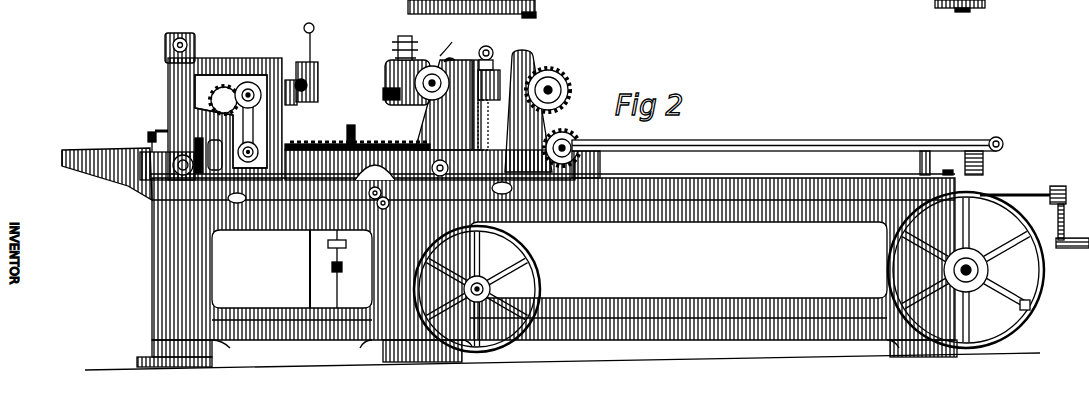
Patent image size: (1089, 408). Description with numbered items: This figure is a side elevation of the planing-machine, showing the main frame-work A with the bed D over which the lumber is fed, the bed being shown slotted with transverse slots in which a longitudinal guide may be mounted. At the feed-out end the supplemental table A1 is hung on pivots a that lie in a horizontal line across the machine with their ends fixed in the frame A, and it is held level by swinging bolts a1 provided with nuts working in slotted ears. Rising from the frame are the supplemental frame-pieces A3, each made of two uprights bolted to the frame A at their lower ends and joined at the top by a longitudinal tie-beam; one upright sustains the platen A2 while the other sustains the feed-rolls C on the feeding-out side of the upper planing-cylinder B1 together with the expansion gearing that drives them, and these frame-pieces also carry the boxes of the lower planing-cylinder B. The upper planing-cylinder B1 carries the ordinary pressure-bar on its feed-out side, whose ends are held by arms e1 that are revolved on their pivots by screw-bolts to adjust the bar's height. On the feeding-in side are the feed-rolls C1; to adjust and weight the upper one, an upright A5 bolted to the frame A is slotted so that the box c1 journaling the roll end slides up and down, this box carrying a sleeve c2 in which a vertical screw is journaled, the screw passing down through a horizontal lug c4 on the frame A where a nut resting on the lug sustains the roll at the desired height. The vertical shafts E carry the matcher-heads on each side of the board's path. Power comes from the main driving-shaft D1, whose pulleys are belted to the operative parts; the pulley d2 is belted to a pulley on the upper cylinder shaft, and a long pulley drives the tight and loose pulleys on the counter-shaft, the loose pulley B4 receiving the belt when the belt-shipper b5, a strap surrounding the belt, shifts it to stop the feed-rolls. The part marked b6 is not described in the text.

The main frame-work A is at (150, 275).
The supplemental table A1 is at (75, 148).
The platen A2 is at (168, 67).
The supplemental frame-pieces A3 is at (233, 57).
The upright A5 is at (533, 56).
The lower planing-cylinder B is at (150, 132).
The upper planing-cylinder B1 is at (416, 70).
The loose pulley B4 is at (487, 289).
The feed-rolls C is at (301, 64).
The feed-rolls C1 is at (500, 68).
The bed D is at (792, 140).
The main driving-shaft D1 is at (988, 268).
The vertical shafts E is at (351, 123).
The pivots a is at (150, 225).
The swinging bolts a1 is at (140, 197).
The belt-shipper b5 is at (530, 22).
The link b6 is at (190, 32).
The box c1 is at (351, 187).
The sleeve c2 is at (563, 102).
The horizontal lug c4 is at (328, 269).
The pulley d2 is at (1034, 260).
The arms e1 is at (451, 46).